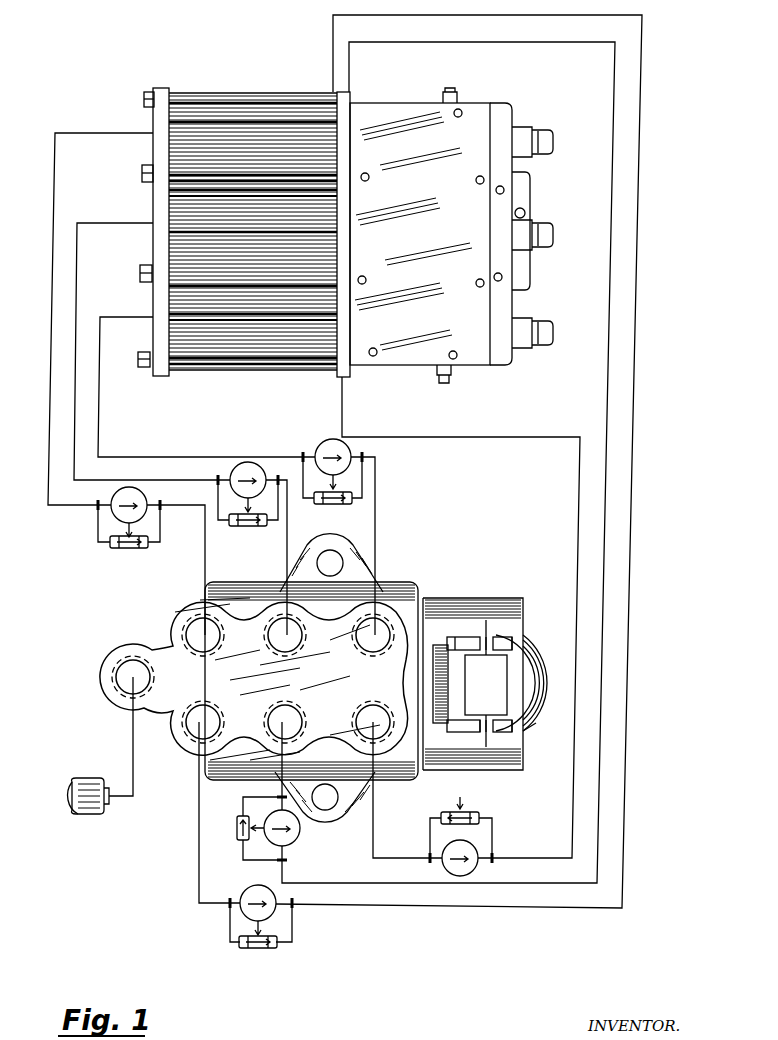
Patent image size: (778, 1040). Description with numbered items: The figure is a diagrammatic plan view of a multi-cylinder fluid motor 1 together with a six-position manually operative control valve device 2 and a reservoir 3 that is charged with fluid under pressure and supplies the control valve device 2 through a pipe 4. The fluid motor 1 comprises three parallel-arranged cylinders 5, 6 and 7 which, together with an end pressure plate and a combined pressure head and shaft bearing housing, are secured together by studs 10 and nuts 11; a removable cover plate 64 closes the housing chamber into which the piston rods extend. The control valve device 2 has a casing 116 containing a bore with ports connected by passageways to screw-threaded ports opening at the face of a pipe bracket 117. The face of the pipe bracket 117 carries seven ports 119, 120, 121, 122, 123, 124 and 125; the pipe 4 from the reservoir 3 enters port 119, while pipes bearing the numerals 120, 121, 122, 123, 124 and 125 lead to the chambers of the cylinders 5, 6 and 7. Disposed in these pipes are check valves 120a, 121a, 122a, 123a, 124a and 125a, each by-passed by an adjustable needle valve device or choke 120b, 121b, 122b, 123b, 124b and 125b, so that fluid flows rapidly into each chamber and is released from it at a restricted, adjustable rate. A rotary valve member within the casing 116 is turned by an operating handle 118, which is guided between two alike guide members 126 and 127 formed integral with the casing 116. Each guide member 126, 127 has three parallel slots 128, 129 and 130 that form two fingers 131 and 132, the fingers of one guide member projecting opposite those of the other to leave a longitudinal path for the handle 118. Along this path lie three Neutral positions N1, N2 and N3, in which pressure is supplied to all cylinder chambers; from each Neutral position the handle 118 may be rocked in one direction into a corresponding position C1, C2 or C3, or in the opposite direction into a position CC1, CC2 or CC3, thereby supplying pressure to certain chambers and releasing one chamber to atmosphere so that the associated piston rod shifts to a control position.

The multi-cylinder fluid motor 1 is at (280, 88).
The manually operative control valve device 2 is at (316, 670).
The reservoir 3 is at (112, 811).
The pipe 4 is at (133, 790).
The cylinder 5 is at (146, 100).
The cylinder 6 is at (176, 200).
The cylinder 7 is at (176, 330).
The studs 10 is at (188, 97).
The nuts 11 is at (148, 90).
The removable cover plate 64 is at (402, 360).
The casing 116 is at (206, 592).
The pipe bracket 117 is at (360, 548).
The operating handle 118 is at (530, 722).
The port 119 is at (117, 686).
The port and pipe 120 is at (152, 133).
The check valve 120a is at (112, 500).
The adjustable needle valve device or choke 120b is at (115, 549).
The port and pipe 121 is at (333, 25).
The check valve 121a is at (243, 893).
The adjustable needle valve device or choke 121b is at (250, 949).
The port and pipe 122 is at (150, 226).
The check valve 122a is at (231, 475).
The adjustable needle valve device or choke 122b is at (243, 527).
The port and pipe 123 is at (349, 60).
The check valve 123a is at (300, 845).
The adjustable needle valve device or choke 123b is at (240, 826).
The port and pipe 124 is at (99, 412).
The check valve 124a is at (315, 452).
The adjustable needle valve device or choke 124b is at (336, 506).
The port and pipe 125 is at (341, 388).
The check valve 125a is at (443, 862).
The adjustable needle valve device or choke 125b is at (441, 815).
The guide member 126 is at (522, 750).
The guide member 127 is at (480, 636).
The slot 128 is at (452, 636).
The slot 129 is at (487, 636).
The slot 130 is at (520, 645).
The finger 131 is at (458, 636).
The finger 132 is at (513, 636).
The Neutral position N1 is at (475, 684).
The Neutral position N2 is at (433, 683).
The Neutral position N3 is at (522, 683).
The handle position CC1 is at (475, 611).
The handle position CC2 is at (438, 611).
The handle position CC3 is at (512, 611).
The handle position C1 is at (481, 762).
The handle position C2 is at (447, 762).
The handle position C3 is at (514, 762).